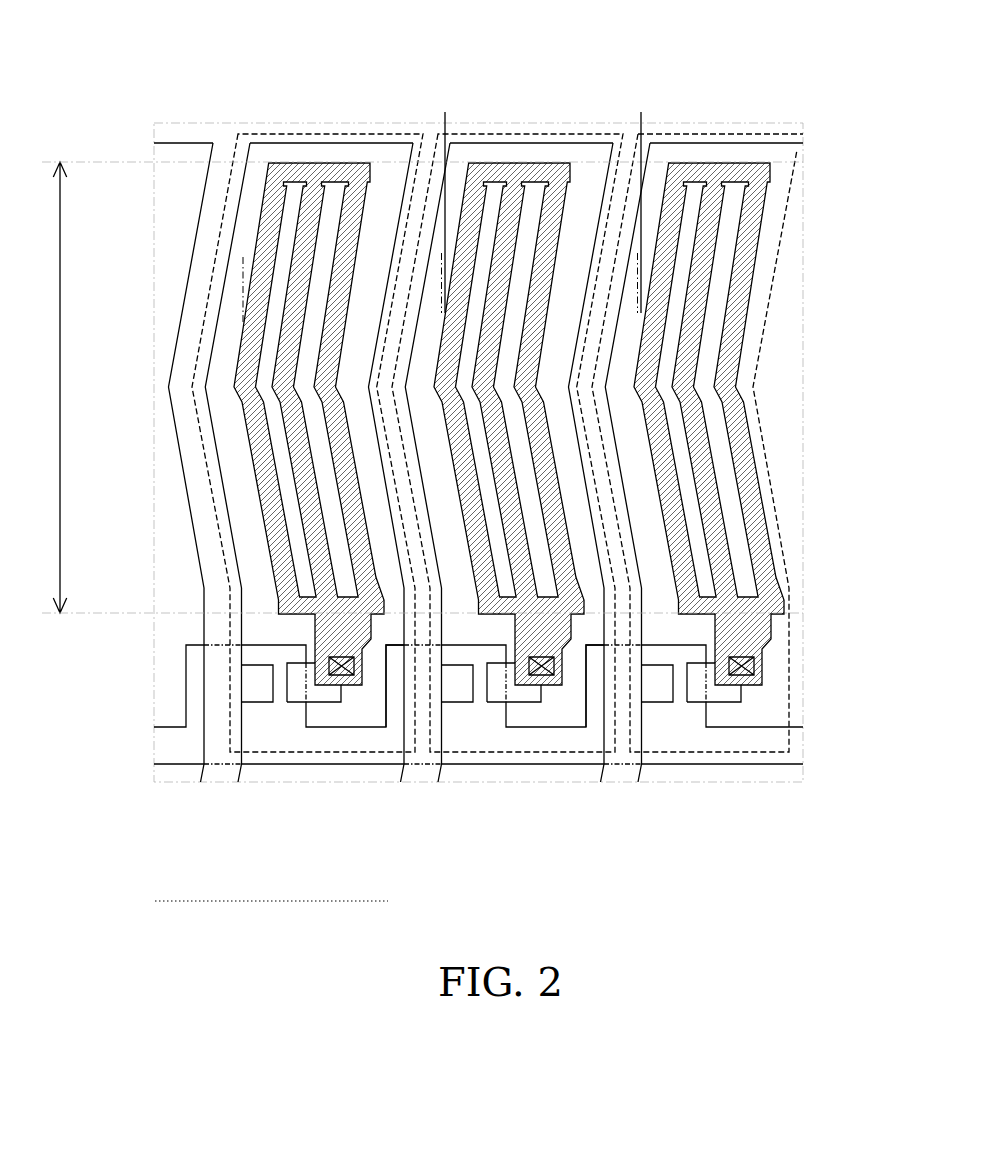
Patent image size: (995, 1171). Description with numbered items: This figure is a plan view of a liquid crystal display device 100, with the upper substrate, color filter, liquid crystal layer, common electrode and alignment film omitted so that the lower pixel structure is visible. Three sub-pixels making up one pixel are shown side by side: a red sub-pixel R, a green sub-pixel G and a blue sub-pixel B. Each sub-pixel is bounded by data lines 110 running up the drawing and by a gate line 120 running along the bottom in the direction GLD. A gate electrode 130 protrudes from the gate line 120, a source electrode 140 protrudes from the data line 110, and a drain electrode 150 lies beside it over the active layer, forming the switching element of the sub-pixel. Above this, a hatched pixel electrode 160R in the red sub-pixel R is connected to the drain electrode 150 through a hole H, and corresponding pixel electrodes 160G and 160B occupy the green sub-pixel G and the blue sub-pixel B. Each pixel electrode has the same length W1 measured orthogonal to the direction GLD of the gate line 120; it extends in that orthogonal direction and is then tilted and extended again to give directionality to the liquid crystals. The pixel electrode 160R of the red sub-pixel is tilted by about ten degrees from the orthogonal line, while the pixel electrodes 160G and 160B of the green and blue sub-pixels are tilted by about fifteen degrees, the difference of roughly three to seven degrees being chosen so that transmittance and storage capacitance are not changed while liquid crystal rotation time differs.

The liquid crystal display device 100 is at (788, 36).
The data line 110 is at (205, 548).
The gate line 120 is at (323, 758).
The gate electrode 130 is at (191, 681).
The source electrode 140 is at (260, 690).
The drain electrode 150 is at (297, 690).
The pixel electrode 160R is at (270, 212).
The pixel electrode 160G is at (472, 212).
The pixel electrode 160B is at (665, 210).
The hole H is at (347, 677).
The red sub-pixel R is at (381, 134).
The green sub-pixel G is at (571, 134).
The blue sub-pixel B is at (781, 134).
The length W1 is at (410, 387).
The direction of the gate line GLD is at (247, 901).